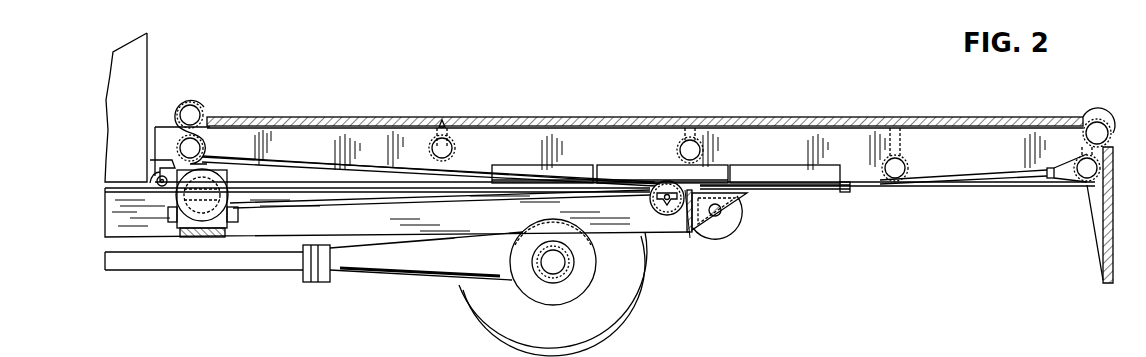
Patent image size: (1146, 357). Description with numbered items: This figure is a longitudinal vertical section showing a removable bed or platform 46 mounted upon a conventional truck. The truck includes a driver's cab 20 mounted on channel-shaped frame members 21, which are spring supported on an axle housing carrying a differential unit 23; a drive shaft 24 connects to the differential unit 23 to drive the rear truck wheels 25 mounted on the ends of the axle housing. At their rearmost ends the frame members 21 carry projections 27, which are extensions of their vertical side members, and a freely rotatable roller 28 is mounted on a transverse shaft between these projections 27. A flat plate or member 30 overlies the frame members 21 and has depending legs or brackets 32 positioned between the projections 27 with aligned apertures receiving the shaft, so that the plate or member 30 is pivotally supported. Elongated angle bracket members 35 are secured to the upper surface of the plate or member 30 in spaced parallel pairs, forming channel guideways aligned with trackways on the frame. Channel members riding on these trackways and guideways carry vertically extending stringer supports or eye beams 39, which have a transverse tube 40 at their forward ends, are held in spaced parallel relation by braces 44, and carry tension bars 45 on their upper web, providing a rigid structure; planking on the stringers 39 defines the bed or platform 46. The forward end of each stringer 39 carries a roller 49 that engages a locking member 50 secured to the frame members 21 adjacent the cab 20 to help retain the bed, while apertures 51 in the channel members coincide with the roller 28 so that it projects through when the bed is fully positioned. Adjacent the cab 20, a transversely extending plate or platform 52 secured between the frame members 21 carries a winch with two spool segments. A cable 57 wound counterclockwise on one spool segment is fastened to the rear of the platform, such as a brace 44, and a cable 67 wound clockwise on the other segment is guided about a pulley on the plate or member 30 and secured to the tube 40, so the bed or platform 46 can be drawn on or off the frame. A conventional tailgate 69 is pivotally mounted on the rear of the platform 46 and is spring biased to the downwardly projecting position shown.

The driver's cab 20 is at (133, 57).
The frame members 21 is at (657, 220).
The differential unit 23 is at (528, 282).
The drive shaft 24 is at (262, 263).
The rear truck wheels 25 is at (625, 292).
The projections 27 is at (704, 218).
The roller 28 is at (730, 222).
The plate or member 30 is at (793, 185).
The depending legs or brackets 32 is at (724, 212).
The angle bracket members 35 is at (828, 174).
The stringer supports or eye beams 39 is at (162, 135).
The tube 40 is at (197, 108).
The braces 44 is at (458, 150).
The tension bars 45 is at (440, 117).
The bed or platform 46 is at (612, 117).
The roller 49 is at (161, 188).
The locking member 50 is at (158, 162).
The apertures 51 is at (708, 187).
The plate or platform 52 is at (196, 240).
The cable 57 is at (968, 180).
The cable 67 is at (214, 160).
The tailgate 69 is at (1113, 210).